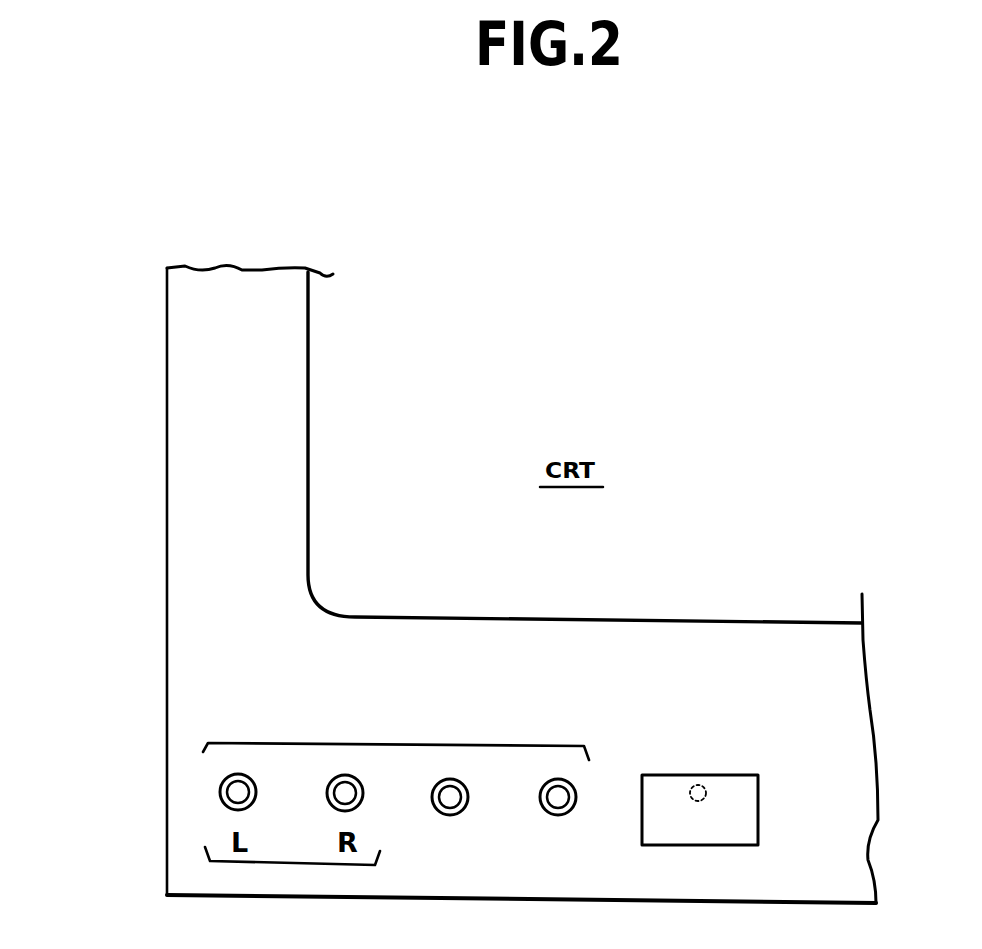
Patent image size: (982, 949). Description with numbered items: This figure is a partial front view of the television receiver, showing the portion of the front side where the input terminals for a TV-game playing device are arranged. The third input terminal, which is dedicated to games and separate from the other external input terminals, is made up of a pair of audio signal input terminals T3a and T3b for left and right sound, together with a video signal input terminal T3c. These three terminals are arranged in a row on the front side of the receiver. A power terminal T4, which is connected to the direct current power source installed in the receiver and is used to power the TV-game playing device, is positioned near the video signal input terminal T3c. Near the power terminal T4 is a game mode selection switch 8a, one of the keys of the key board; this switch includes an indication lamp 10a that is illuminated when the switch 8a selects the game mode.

The audio signal input terminal T3a is at (220, 790).
The audio signal input terminal T3b is at (359, 804).
The video signal input terminal T3c is at (463, 808).
The power terminal T4 is at (567, 810).
The game mode selection switch 8a is at (758, 790).
The indication lamp 10a is at (698, 785).